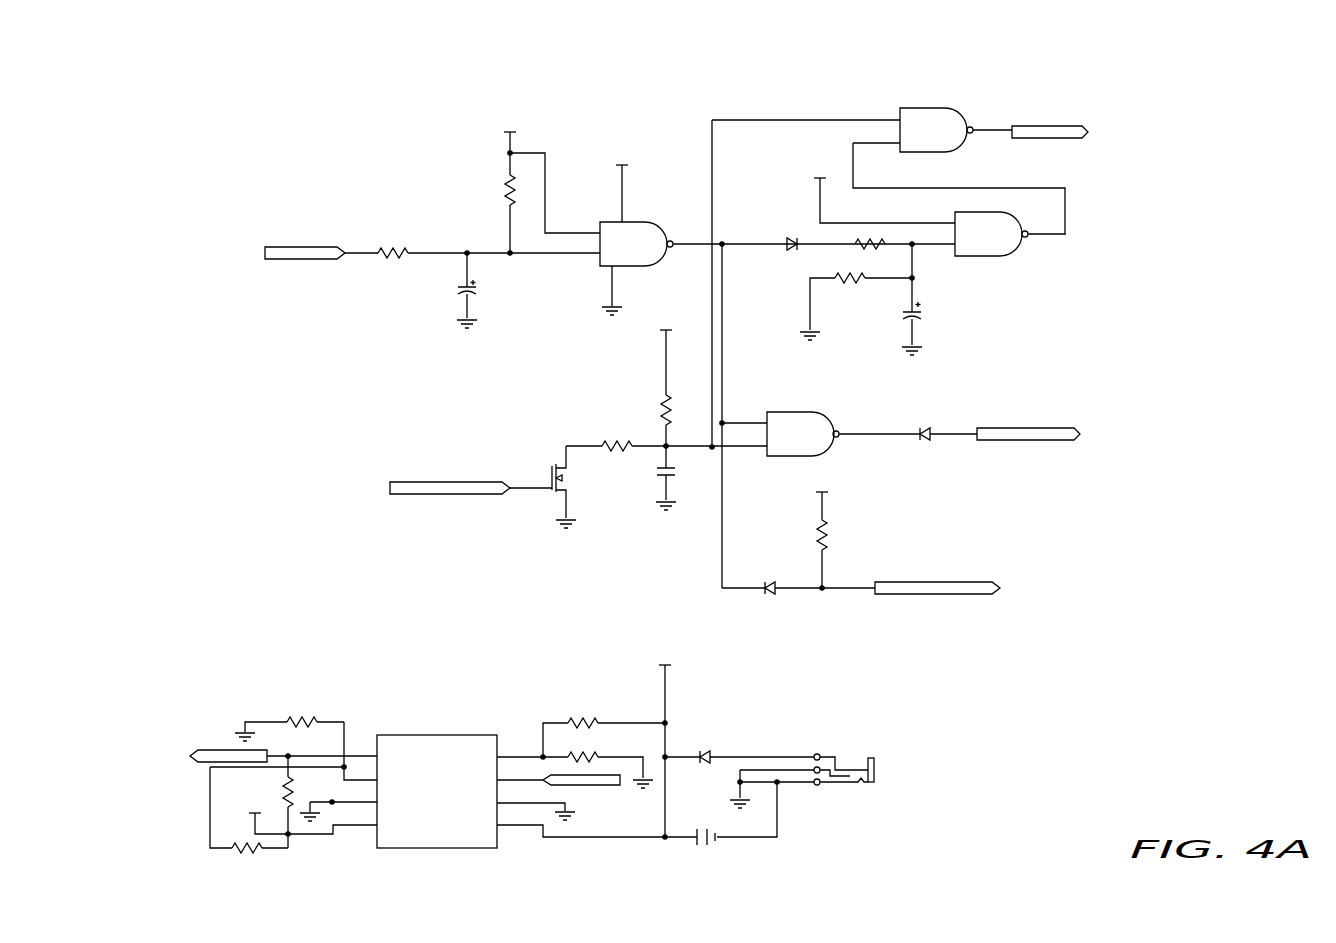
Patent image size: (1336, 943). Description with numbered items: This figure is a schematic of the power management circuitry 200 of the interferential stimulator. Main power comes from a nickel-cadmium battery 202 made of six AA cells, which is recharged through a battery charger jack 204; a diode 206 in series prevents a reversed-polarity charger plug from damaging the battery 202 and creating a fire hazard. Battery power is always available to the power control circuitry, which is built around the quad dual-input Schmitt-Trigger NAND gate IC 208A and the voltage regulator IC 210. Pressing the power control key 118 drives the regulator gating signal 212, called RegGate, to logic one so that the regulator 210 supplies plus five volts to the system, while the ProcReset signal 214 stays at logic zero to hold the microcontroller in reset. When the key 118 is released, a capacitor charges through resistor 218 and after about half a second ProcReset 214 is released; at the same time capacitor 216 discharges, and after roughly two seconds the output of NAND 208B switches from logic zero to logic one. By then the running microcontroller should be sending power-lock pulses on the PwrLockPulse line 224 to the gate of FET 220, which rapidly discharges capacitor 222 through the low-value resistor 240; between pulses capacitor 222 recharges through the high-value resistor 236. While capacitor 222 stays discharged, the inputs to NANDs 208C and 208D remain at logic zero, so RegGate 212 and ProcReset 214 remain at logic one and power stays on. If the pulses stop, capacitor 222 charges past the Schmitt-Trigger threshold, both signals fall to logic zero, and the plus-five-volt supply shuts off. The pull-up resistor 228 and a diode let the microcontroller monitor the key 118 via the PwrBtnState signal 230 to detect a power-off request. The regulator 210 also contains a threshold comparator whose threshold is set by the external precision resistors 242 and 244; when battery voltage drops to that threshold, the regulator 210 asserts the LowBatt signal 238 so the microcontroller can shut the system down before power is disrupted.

The electronic circuit 200 is at (330, 133).
The power control key 118 is at (268, 250).
The resistor 218 is at (510, 195).
The quad dual-input Schmitt-Trigger NAND gate IC 208A is at (660, 222).
The output NAND 208B is at (1008, 247).
The NAND gate 208C is at (918, 112).
The NAND gate 208D is at (808, 412).
The regulator gating signal (RegGate) 212 is at (1042, 126).
The ProcReset signal 214 is at (1050, 429).
The capacitor 216 is at (915, 318).
The FET 220 is at (550, 470).
The capacitor 222 is at (672, 478).
The PwrLockPulse line 224 is at (390, 487).
The pull-up resistor 228 is at (822, 538).
The PwrBtnState signal 230 is at (958, 595).
The high-value resistor 236 is at (666, 400).
The low-value resistor 240 is at (617, 452).
The LowBatt signal 238 is at (227, 752).
The voltage regulator IC 210 is at (437, 748).
The precision resistor 242 is at (572, 755).
The precision resistor 244 is at (580, 723).
The diode 206 is at (705, 750).
The battery charger jack 204 is at (829, 735).
The nickel-cadmium battery 202 is at (693, 838).